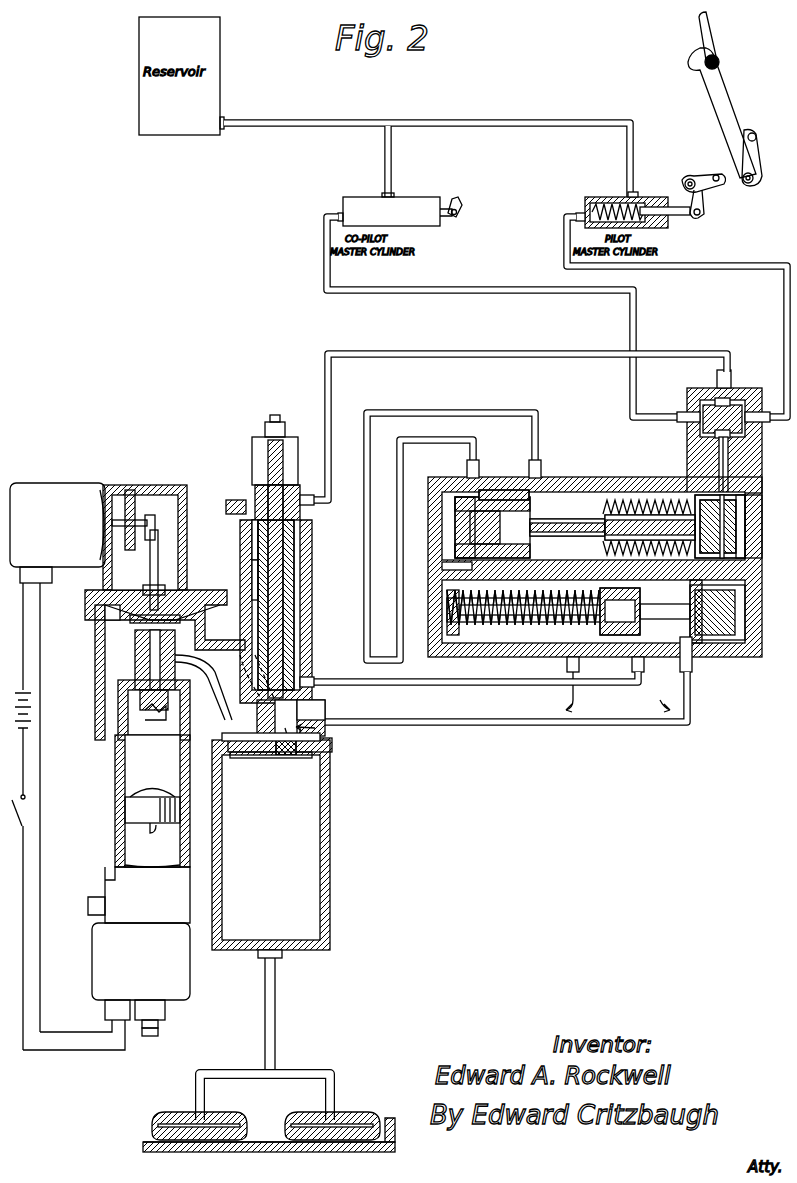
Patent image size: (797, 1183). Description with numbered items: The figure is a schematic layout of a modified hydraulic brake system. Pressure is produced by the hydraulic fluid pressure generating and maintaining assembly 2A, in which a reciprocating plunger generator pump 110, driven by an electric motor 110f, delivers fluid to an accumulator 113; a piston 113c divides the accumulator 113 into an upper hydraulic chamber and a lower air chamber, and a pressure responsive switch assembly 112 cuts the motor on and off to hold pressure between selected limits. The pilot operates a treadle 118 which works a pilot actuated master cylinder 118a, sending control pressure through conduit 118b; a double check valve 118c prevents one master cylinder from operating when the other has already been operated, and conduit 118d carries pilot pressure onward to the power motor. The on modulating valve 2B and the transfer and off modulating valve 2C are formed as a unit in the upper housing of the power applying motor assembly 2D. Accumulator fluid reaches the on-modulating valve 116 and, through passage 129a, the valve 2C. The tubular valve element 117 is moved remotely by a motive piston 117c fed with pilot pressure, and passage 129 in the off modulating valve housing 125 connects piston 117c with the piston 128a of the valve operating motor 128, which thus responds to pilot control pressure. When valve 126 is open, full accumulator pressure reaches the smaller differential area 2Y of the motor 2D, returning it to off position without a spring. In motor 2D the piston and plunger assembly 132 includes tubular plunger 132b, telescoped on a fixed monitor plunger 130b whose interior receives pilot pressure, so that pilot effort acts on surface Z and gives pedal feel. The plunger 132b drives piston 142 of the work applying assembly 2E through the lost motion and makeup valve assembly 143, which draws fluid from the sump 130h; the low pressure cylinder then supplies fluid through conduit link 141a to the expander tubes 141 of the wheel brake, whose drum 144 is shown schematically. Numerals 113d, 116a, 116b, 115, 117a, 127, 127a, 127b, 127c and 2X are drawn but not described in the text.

The treadle 118 is at (714, 42).
The pilot actuated master cylinder 118a is at (600, 197).
The conduit 118b is at (784, 321).
The double check valve 118c is at (745, 380).
The conduit 118d is at (528, 352).
The conduit connecting ports 113d is at (370, 455).
The on-modulating valve 116 is at (470, 460).
The passage 116a is at (495, 490).
The port 116b is at (536, 460).
The piston 115 is at (455, 500).
The tubular valve element 117 is at (650, 515).
The piston rod 117a is at (595, 520).
The motive piston 117c is at (730, 520).
The passage 129 is at (745, 562).
The passage 129a is at (442, 566).
The spring 127 is at (540, 628).
The rod 127a is at (490, 622).
The piston 127b is at (630, 636).
The piston head 127c is at (450, 635).
The transfer and off modulating valve operating motor 128 is at (725, 640).
The piston 128a is at (735, 640).
The valve 126 is at (648, 672).
The off modulating valve housing 125 is at (745, 660).
The on modulating valve 2B is at (608, 567).
The transfer and off modulating valve 2C is at (616, 611).
The power applying motor assembly 2D is at (326, 604).
The chamber 2X is at (255, 540).
The smaller differential area 2Y is at (255, 570).
The piston and plunger assembly 132 is at (299, 584).
The monitor plunger 130b is at (290, 626).
The tubular plunger 132b is at (283, 641).
The surface Z is at (296, 674).
The sump 130h is at (318, 705).
The lost motion and makeup valve assembly 143 is at (318, 740).
The piston 142 is at (315, 760).
The work applying assembly 2E is at (341, 849).
The conduit link 141a is at (275, 992).
The expander tubes 141 is at (172, 1112).
The drum 144 is at (148, 1142).
The hydraulic fluid pressure generating and maintaining assembly 2A is at (90, 648).
The reciprocating plunger generator pump 110 is at (96, 582).
The electric motor 110f is at (85, 485).
The accumulator 113 is at (115, 765).
The piston 113c is at (125, 808).
The pressure responsive switch assembly 112 is at (86, 948).